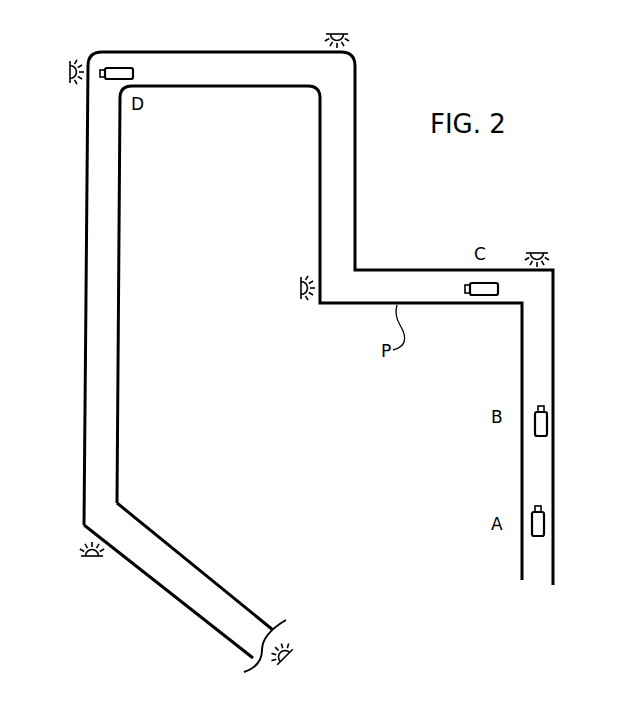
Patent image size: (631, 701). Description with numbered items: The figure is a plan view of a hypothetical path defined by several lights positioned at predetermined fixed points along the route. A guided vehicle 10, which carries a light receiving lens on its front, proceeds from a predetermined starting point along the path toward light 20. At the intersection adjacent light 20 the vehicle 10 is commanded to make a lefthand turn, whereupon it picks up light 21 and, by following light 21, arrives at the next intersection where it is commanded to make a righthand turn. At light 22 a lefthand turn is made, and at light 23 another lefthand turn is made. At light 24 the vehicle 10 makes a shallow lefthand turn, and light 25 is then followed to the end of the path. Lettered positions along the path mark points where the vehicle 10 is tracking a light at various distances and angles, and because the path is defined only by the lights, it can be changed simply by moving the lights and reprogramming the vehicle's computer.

The guided vehicle 10 is at (546, 516).
The light 20 is at (540, 244).
The light 21 is at (296, 290).
The light 22 is at (338, 28).
The light 23 is at (64, 74).
The light 24 is at (93, 564).
The light 25 is at (293, 659).